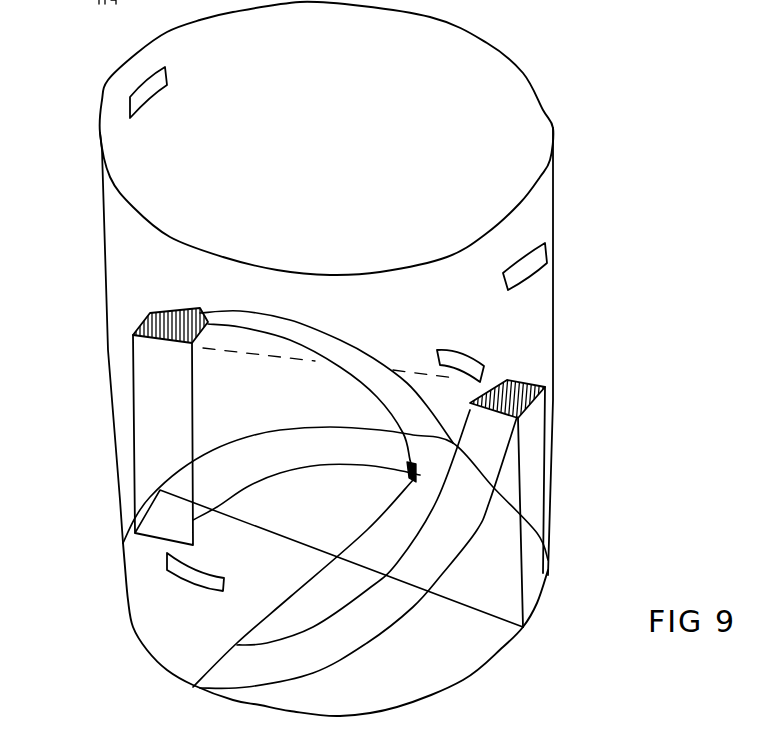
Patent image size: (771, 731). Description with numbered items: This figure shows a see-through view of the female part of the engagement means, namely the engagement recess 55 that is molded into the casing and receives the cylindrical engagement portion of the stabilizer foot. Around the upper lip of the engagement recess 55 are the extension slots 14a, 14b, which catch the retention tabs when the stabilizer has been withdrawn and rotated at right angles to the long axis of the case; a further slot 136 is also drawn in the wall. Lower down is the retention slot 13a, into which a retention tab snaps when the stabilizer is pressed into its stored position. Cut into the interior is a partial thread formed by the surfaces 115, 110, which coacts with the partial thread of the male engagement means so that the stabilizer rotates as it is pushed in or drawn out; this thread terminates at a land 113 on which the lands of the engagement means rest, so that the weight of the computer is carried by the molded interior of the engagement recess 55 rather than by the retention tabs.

The engagement recess 55 is at (522, 107).
The extension slot 14a is at (158, 82).
The extension slot 14b is at (533, 267).
The slot 136 is at (467, 353).
The retention slot 13a is at (183, 572).
The partial thread surface 110 is at (214, 408).
The land 113 is at (535, 378).
The partial thread 115 is at (452, 537).